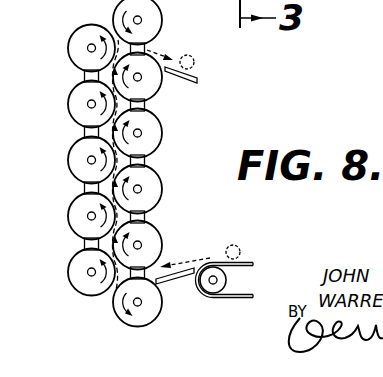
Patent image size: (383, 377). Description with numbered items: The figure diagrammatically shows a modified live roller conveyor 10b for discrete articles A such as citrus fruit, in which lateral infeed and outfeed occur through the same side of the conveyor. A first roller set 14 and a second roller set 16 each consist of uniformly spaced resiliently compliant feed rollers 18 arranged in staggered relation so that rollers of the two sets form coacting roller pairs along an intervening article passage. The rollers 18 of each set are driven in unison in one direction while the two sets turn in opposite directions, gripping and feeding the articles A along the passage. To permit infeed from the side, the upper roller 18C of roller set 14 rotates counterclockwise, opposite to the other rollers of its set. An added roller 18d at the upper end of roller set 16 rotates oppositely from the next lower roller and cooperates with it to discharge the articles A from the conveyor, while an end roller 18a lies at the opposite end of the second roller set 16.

The first roller set 14 is at (66, 126).
The second roller set 16 is at (170, 160).
The feed roller 18 is at (81, 225).
The upper roller 18C is at (81, 59).
The added roller 18d is at (157, 26).
The end roller 18a is at (144, 318).
The modified conveyor 10b is at (192, 127).
The articles A is at (195, 61).